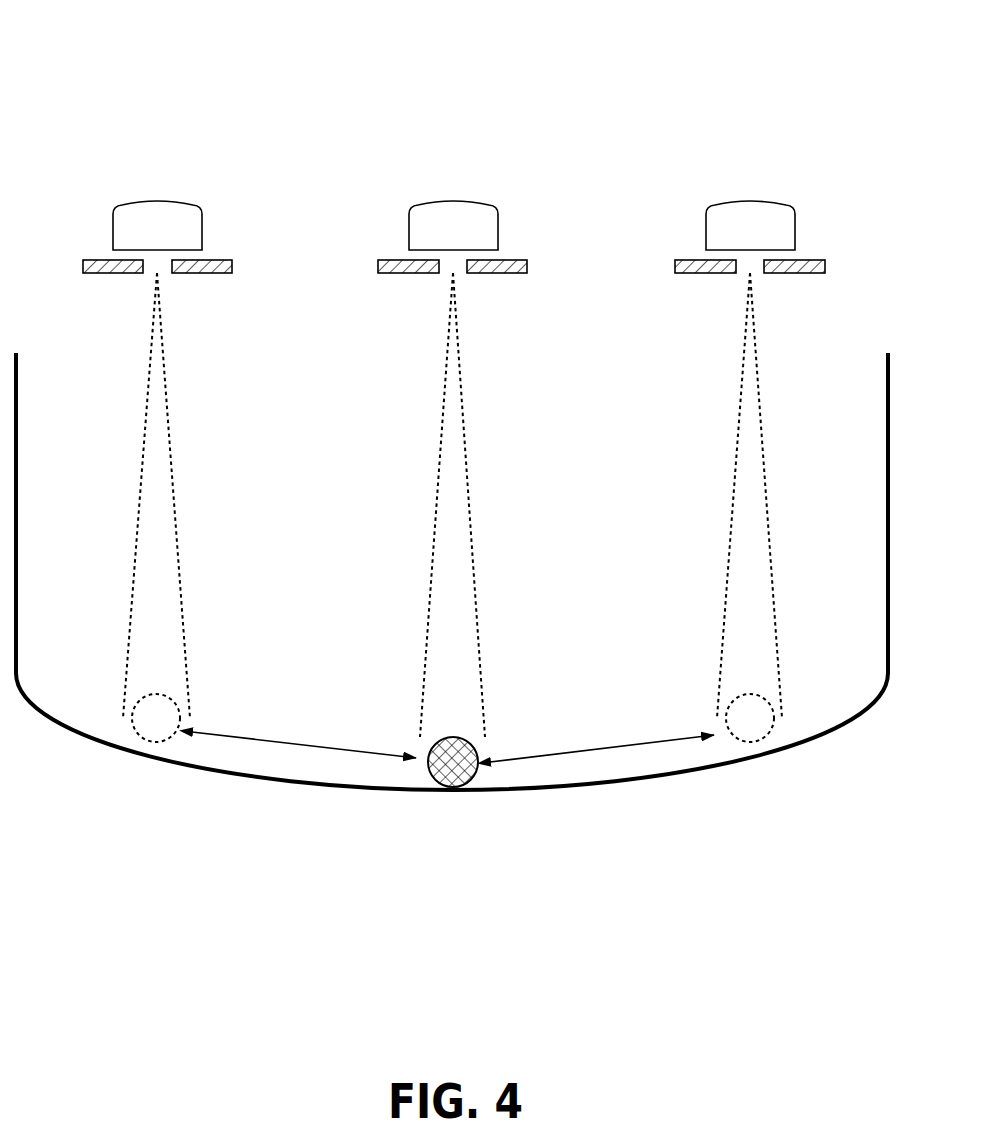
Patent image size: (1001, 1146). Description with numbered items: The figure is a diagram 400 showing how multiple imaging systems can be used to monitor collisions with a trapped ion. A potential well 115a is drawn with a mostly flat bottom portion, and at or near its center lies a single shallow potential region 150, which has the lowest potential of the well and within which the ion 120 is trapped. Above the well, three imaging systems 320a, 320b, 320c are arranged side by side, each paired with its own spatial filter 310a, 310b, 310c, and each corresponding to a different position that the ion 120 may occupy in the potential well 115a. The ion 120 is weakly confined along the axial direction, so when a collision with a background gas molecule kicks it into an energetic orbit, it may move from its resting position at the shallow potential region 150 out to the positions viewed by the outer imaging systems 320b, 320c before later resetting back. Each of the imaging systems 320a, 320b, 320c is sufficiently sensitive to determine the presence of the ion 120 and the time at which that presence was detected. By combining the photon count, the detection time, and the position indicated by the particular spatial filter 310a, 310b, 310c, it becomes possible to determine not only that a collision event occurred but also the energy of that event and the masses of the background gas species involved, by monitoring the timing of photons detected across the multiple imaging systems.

The diagram 400 is at (166, 62).
The potential well 115a is at (18, 397).
The ion 120 is at (157, 742).
The shallow potential region 150 is at (448, 792).
The spatial filter 310a is at (527, 266).
The spatial filter 310b is at (825, 266).
The spatial filter 310c is at (232, 266).
The imaging system 320a is at (498, 212).
The imaging system 320b is at (795, 212).
The imaging system 320c is at (202, 212).